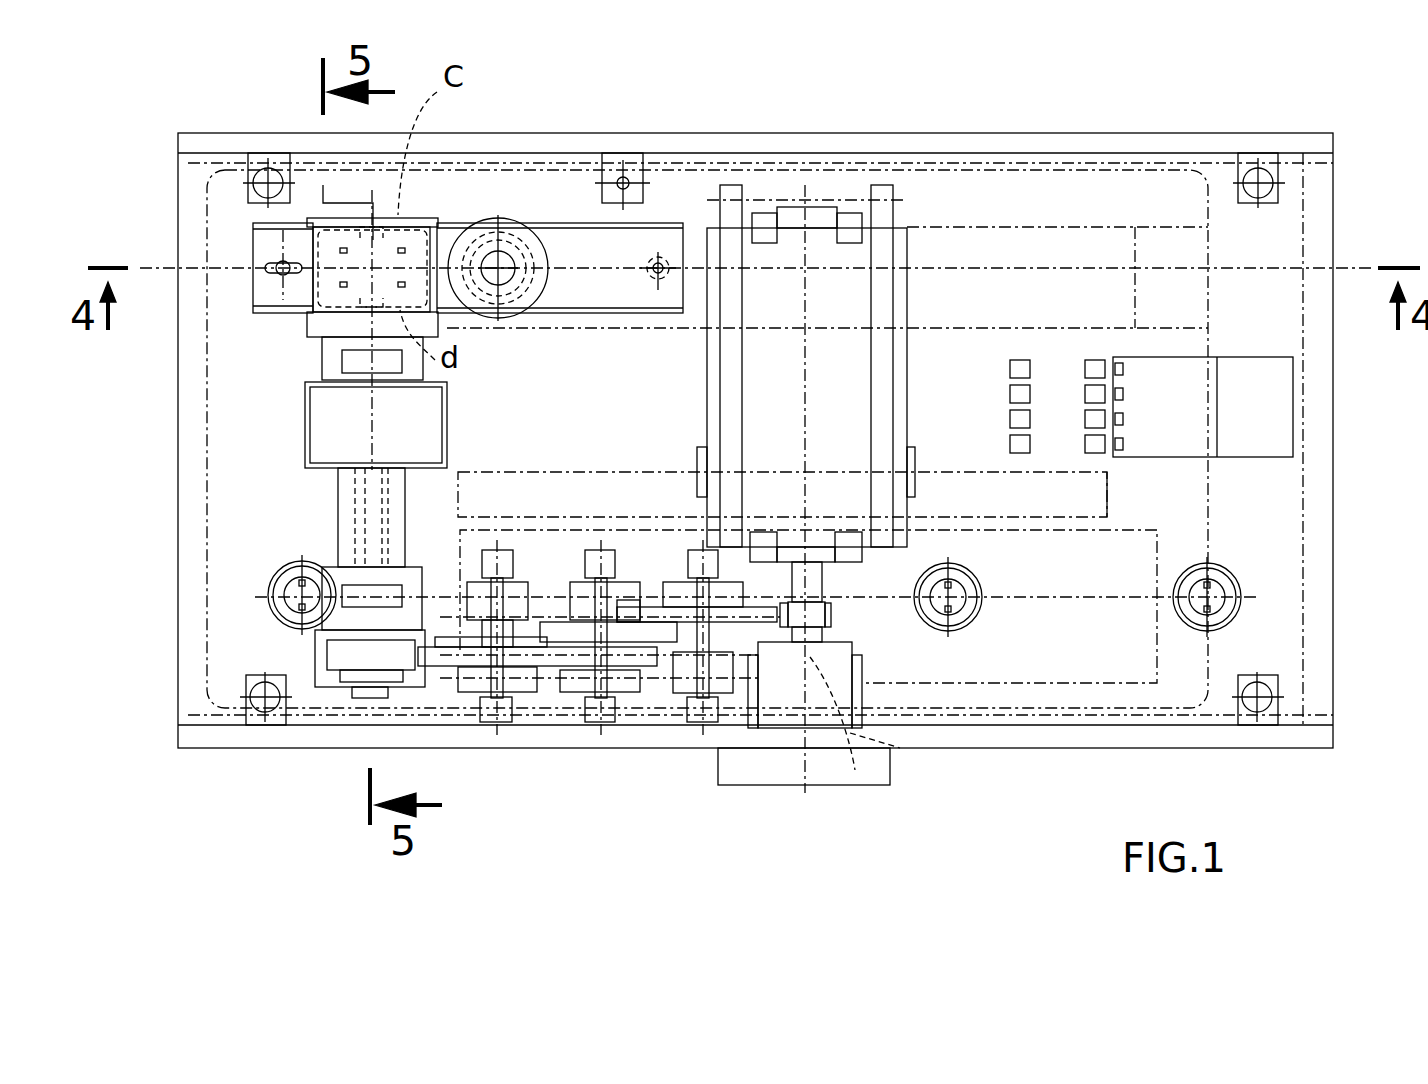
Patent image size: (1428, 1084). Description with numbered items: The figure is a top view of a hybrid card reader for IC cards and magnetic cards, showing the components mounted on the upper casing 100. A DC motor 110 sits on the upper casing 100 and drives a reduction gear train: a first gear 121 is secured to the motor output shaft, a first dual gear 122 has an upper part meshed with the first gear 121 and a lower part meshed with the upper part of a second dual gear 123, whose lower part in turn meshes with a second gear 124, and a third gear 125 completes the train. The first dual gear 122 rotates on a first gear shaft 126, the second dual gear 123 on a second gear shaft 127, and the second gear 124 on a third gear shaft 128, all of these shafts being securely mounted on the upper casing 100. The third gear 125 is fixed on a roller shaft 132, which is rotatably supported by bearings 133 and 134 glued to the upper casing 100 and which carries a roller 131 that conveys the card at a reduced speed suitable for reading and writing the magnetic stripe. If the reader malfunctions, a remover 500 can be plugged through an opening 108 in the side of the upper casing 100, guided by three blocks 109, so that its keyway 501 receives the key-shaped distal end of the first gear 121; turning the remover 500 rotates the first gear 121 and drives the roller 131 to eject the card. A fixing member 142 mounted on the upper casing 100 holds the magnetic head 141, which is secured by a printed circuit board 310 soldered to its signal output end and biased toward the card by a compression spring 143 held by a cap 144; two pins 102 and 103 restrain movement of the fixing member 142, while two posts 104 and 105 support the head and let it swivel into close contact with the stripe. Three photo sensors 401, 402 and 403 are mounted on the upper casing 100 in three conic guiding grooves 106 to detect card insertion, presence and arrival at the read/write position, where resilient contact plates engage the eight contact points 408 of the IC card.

The upper casing 100 is at (1333, 520).
The pin 102 is at (660, 262).
The pin 103 is at (268, 266).
The post 104 is at (648, 280).
The post 105 is at (274, 278).
The conic guiding groove 106 is at (277, 592).
The opening 108 is at (900, 748).
The block 109 is at (857, 672).
The DC motor 110 is at (820, 245).
The first gear 121 is at (830, 615).
The first dual gear 122 is at (732, 638).
The second dual gear 123 is at (622, 660).
The second gear 124 is at (537, 660).
The third gear 125 is at (338, 658).
The first gear shaft 126 is at (683, 585).
The second gear shaft 127 is at (587, 587).
The third gear shaft 128 is at (512, 590).
The roller 131 is at (423, 403).
The roller shaft 132 is at (352, 513).
The bearing 133 is at (343, 357).
The bearing 134 is at (342, 588).
The magnetic head 141 is at (420, 220).
The fixing member 142 is at (680, 247).
The compression spring 143 is at (530, 213).
The cap 144 is at (551, 245).
The printed circuit board 310 is at (1300, 243).
The photo sensor 401 is at (292, 607).
The photo sensor 402 is at (960, 607).
The photo sensor 403 is at (1220, 603).
The contact points 408 is at (1087, 367).
The remover 500 is at (820, 777).
The keyway 501 is at (855, 770).